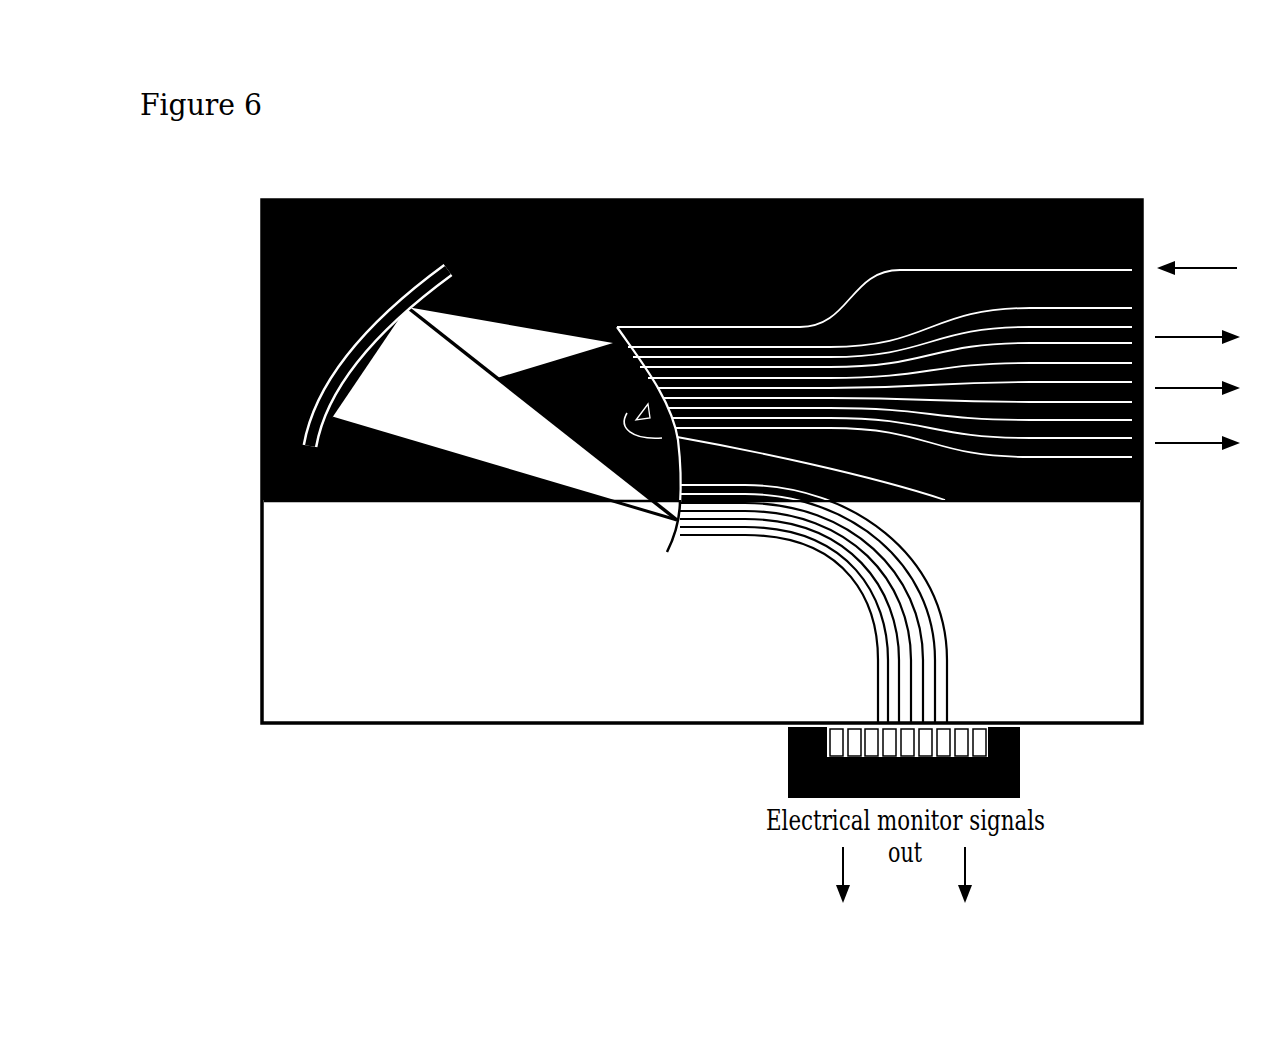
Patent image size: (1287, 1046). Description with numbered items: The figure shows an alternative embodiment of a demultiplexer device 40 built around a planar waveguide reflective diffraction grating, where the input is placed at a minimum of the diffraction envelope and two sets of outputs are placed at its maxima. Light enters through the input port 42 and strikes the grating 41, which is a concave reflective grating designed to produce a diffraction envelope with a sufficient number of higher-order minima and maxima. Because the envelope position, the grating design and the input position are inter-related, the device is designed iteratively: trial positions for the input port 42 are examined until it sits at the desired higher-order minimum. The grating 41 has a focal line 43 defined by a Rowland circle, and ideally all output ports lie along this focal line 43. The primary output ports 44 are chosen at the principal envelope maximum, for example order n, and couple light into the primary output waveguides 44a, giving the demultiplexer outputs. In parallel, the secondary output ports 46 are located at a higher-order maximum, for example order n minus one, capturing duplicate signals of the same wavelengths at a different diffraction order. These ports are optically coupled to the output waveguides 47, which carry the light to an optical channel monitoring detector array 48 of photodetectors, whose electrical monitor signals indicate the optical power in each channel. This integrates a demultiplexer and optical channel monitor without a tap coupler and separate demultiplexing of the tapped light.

The demultiplexer device 40 is at (971, 120).
The grating 41 is at (331, 340).
The input port 42 is at (626, 298).
The focal line 43 is at (681, 564).
The primary output ports 44 is at (945, 500).
The primary output waveguides 44a is at (874, 301).
The secondary output ports 46 is at (641, 536).
The output waveguides 47 is at (831, 604).
The optical channel monitoring detector array 48 is at (926, 762).